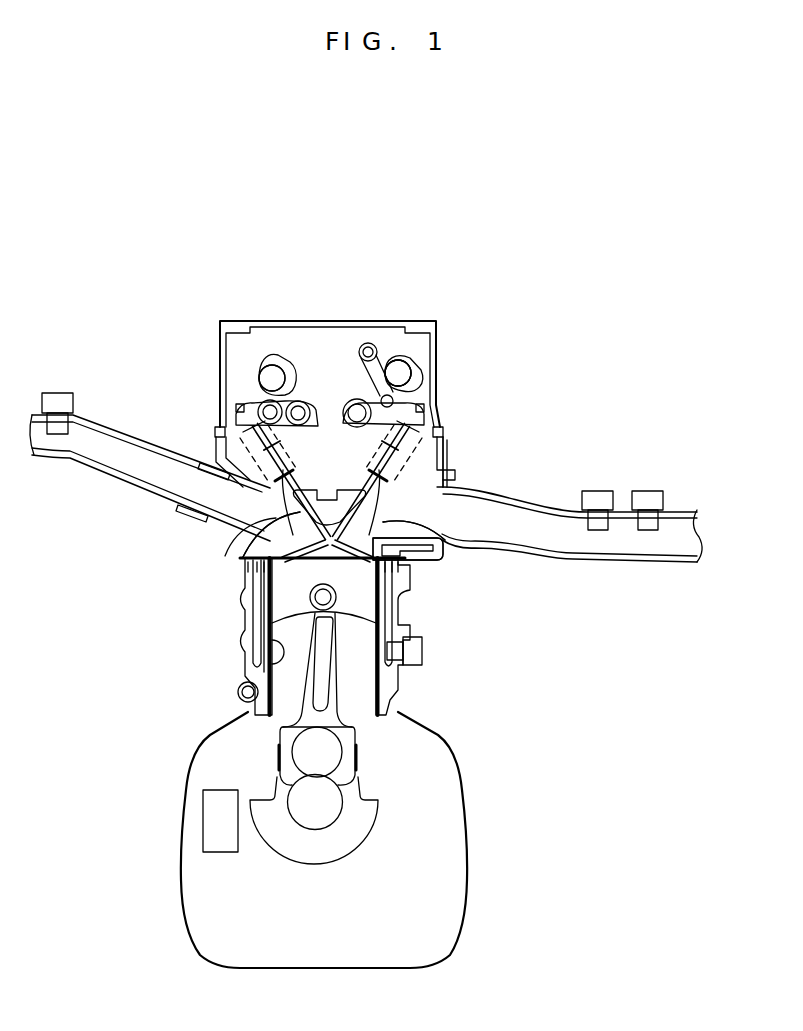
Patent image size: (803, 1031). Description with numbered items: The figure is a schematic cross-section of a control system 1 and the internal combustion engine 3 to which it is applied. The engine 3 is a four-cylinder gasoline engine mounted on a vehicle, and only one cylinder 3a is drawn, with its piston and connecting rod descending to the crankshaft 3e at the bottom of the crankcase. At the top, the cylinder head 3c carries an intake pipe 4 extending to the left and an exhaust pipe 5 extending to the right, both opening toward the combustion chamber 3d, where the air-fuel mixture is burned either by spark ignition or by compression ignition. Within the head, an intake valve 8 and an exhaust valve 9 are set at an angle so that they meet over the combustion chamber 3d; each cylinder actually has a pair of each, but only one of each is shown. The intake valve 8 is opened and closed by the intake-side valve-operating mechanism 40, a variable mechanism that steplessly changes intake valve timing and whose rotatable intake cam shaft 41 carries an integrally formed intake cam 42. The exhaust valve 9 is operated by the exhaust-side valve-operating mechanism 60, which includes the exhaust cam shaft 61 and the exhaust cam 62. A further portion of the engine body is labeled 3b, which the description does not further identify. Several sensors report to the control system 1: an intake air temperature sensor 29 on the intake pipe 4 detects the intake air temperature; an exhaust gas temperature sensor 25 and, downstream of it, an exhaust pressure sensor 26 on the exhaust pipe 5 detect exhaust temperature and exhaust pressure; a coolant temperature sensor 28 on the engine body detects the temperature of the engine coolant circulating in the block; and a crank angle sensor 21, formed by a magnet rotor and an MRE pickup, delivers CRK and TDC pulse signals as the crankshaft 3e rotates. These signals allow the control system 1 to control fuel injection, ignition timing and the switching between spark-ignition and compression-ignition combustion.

The control system 1 is at (452, 190).
The internal combustion engine 3 is at (313, 308).
The cylinder 3a is at (247, 679).
The cylinder block 3b is at (270, 592).
The cylinder head 3c is at (450, 450).
The combustion chamber 3d is at (337, 560).
The crankshaft 3e is at (335, 824).
The intake pipe 4 is at (112, 483).
The exhaust pipe 5 is at (675, 567).
The intake valve 8 is at (258, 536).
The exhaust valve 9 is at (368, 514).
The crank angle sensor 21 is at (203, 833).
The exhaust gas temperature sensor 25 is at (594, 490).
The exhaust pressure sensor 26 is at (647, 490).
The coolant temperature sensor 28 is at (424, 651).
The intake air temperature sensor 29 is at (58, 393).
The intake-side valve-operating mechanism 40 is at (250, 354).
The intake cam shaft 41 is at (270, 380).
The intake cam 42 is at (267, 360).
The exhaust-side valve-operating mechanism 60 is at (387, 345).
The exhaust cam shaft 61 is at (399, 368).
The exhaust cam 62 is at (418, 378).